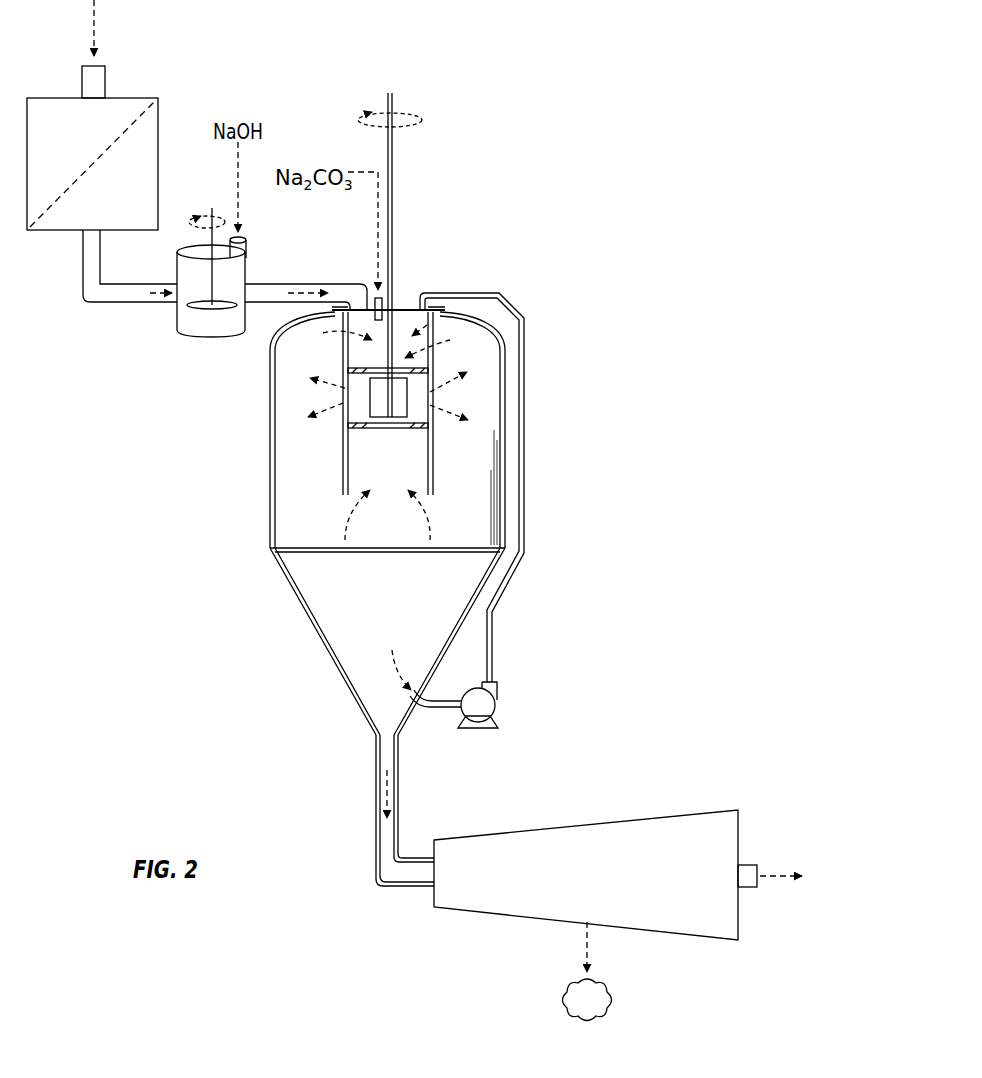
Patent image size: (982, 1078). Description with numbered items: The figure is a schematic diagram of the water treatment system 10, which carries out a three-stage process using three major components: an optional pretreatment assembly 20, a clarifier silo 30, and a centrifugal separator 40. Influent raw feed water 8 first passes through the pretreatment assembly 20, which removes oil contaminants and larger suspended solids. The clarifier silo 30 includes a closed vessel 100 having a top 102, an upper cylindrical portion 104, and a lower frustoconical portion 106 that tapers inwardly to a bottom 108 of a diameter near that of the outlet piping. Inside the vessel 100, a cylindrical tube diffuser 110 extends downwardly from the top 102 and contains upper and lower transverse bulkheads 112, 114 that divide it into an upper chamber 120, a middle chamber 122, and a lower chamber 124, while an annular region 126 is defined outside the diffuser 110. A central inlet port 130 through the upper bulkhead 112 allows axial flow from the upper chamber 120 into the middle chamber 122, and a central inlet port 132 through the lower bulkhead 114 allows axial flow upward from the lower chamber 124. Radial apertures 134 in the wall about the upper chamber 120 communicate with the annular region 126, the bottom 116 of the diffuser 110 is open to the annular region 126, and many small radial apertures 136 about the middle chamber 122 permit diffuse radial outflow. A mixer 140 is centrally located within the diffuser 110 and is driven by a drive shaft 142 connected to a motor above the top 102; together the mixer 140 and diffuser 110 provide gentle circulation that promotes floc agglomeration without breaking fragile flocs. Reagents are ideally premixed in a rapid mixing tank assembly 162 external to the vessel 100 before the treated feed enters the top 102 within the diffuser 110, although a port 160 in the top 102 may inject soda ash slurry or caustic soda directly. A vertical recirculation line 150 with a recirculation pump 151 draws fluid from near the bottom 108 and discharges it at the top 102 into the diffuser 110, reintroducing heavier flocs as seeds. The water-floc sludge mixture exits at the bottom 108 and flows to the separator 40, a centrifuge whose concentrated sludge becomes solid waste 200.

The influent raw feed water 8 is at (96, 30).
The water treatment system 10 is at (664, 118).
The pretreatment assembly 20 is at (128, 98).
The clarifier silo 30 is at (270, 500).
The centrifugal separator 40 is at (595, 823).
The closed vessel 100 is at (280, 566).
The top 102 is at (316, 327).
The upper cylindrical portion 104 is at (270, 427).
The lower frustoconical portion 106 is at (325, 653).
The bottom 108 is at (376, 738).
The cylindrical tube diffuser 110 is at (432, 465).
The upper bulkhead 112 is at (420, 360).
The lower bulkhead 114 is at (356, 430).
The bottom of diffuser 116 is at (432, 495).
The upper chamber 120 is at (398, 315).
The middle chamber 122 is at (360, 400).
The lower chamber 124 is at (358, 474).
The annular region 126 is at (324, 481).
The central inlet port 130 is at (375, 368).
The central inlet port 132 is at (398, 427).
The radial apertures 134 is at (432, 334).
The small radial apertures 136 is at (432, 396).
The mixer 140 is at (380, 412).
The drive shaft 142 is at (394, 183).
The vertical recirculation line 150 is at (515, 578).
The recirculation pump 151 is at (497, 715).
The port 160 is at (373, 297).
The rapid mixing tank assembly 162 is at (176, 270).
The solid waste 200 is at (568, 992).